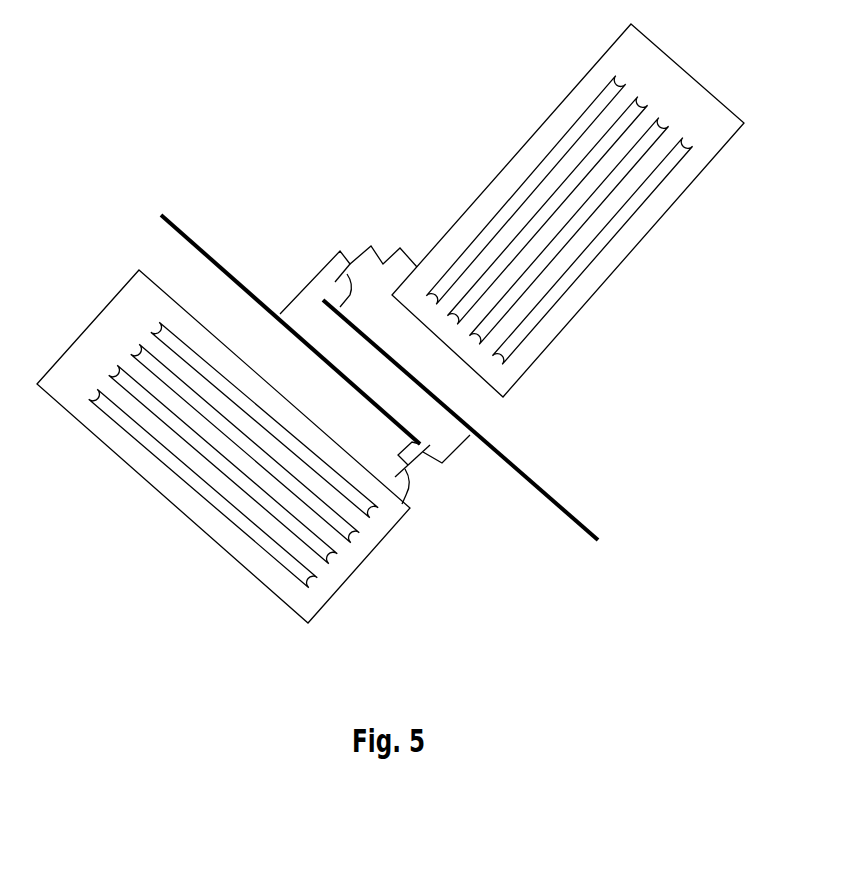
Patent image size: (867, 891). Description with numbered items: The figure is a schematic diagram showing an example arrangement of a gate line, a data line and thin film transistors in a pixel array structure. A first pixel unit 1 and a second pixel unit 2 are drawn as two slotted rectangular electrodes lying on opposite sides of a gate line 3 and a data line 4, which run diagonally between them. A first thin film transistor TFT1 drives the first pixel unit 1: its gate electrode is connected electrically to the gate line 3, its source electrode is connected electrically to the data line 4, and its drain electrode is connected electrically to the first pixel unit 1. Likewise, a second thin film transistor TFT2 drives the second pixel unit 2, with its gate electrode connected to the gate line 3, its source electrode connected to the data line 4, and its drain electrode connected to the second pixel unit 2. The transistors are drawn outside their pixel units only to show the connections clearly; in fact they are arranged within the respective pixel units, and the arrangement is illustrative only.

The first pixel unit 1 is at (100, 350).
The second pixel unit 2 is at (658, 80).
The gate line 3 is at (205, 250).
The data line 4 is at (543, 487).
The first thin film transistor TFT1 is at (448, 473).
The second thin film transistor TFT2 is at (348, 267).